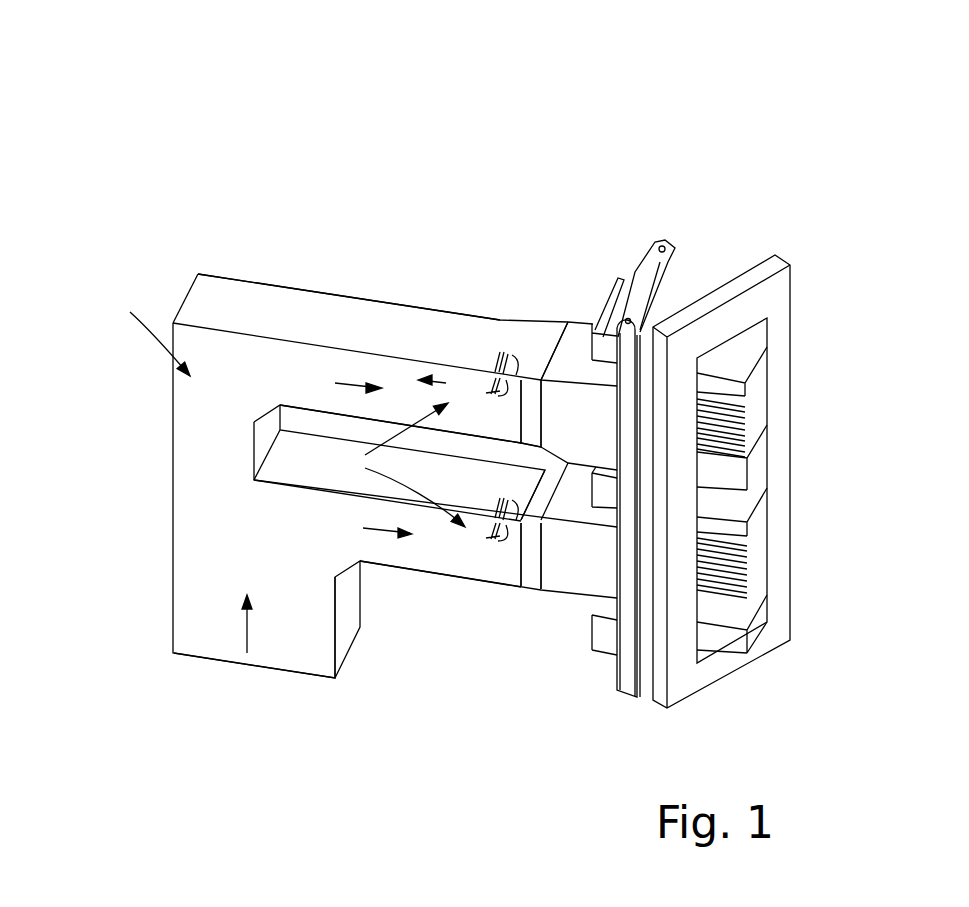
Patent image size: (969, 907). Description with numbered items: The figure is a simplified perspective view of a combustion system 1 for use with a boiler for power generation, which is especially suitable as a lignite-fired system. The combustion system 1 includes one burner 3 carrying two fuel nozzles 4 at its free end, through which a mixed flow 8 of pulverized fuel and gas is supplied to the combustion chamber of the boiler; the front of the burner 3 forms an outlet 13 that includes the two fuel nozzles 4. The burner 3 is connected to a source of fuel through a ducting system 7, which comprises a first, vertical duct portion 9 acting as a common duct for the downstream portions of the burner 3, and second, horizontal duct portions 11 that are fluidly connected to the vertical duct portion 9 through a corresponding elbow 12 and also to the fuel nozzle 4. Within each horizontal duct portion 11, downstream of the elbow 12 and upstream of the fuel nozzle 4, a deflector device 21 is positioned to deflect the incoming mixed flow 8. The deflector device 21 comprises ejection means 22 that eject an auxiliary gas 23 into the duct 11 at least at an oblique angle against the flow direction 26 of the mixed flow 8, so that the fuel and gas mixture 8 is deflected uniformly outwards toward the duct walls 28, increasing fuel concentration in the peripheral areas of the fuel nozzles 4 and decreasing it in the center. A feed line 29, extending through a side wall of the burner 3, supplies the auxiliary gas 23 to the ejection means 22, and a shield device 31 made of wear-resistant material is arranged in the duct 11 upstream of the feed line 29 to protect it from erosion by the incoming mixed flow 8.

The combustion system 1 is at (95, 140).
The burner 3 is at (257, 262).
The fuel nozzle 4 is at (800, 332).
The ducting system 7 is at (149, 330).
The mixed flow of pulverized fuel and gas 8 is at (350, 383).
The first duct portion 9 is at (190, 565).
The second duct portion 11 is at (320, 355).
The elbow 12 is at (200, 297).
The outlet 13 is at (770, 640).
The deflector device 21 is at (488, 338).
The ejection means 22 is at (393, 465).
The auxiliary gas 23 is at (452, 382).
The flow direction 26 is at (376, 532).
The duct wall 28 is at (410, 320).
The feed line 29 is at (520, 378).
The shield device 31 is at (500, 378).